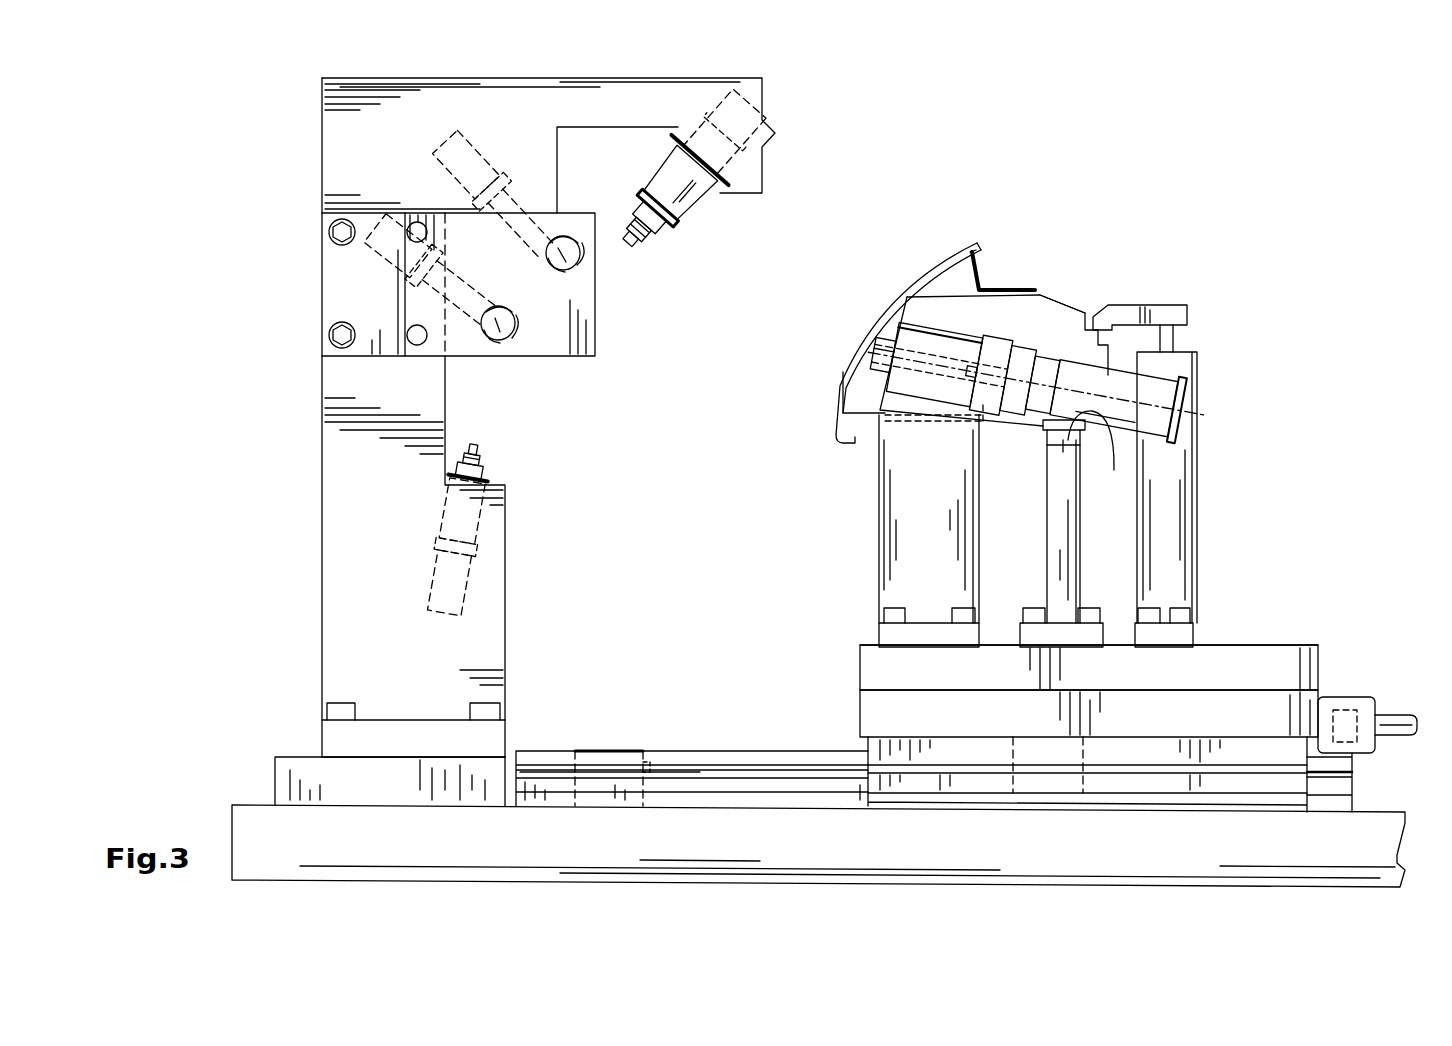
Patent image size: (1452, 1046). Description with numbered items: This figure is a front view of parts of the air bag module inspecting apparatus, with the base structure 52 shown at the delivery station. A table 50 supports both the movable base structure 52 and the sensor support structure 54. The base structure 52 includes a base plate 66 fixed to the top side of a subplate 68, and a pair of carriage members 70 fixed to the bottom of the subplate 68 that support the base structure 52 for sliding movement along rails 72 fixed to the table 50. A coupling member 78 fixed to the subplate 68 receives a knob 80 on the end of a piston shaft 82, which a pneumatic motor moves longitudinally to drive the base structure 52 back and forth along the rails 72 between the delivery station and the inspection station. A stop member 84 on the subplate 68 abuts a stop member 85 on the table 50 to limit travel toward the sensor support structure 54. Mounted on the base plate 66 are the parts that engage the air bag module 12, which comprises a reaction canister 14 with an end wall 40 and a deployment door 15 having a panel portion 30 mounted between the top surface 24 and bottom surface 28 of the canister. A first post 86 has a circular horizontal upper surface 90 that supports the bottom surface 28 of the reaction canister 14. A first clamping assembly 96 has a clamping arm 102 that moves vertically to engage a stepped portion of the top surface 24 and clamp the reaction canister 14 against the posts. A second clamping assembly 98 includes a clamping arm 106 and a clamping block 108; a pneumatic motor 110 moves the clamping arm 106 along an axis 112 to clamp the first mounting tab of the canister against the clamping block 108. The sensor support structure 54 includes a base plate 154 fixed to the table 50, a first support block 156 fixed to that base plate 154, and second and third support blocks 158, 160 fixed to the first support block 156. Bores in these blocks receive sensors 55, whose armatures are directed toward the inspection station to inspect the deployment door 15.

The air bag module 12 is at (920, 250).
The reaction canister 14 is at (1072, 292).
The deployment door 15 is at (846, 360).
The top surface 24 is at (1068, 298).
The bottom surface 28 is at (1046, 432).
The panel portion 30 is at (900, 287).
The end wall 40 is at (963, 318).
The table 50 is at (252, 808).
The base structure 52 is at (1288, 566).
The sensor support structure 54 is at (440, 75).
The sensors 55 is at (492, 155).
The base plate 66 is at (872, 657).
The subplate 68 is at (872, 706).
The carriage members 70 is at (872, 743).
The rails 72 is at (766, 752).
The coupling member 78 is at (1322, 700).
The knob 80 is at (1350, 718).
The piston shaft 82 is at (1393, 720).
The stop member 84 is at (1010, 780).
The stop member 85 is at (660, 776).
The first post 86 is at (1070, 498).
The upper surface 90 is at (1098, 418).
The first clamping assembly 96 is at (1203, 357).
The second clamping assembly 98 is at (876, 490).
The clamping arm 102 is at (1176, 306).
The clamping arm 106 is at (877, 343).
The clamping block 108 is at (915, 385).
The pneumatic motor 110 is at (1190, 416).
The axis 112 is at (1192, 410).
The base plate 154 is at (300, 758).
The first support block 156 is at (352, 400).
The second support block 158 is at (348, 153).
The third support block 160 is at (332, 290).